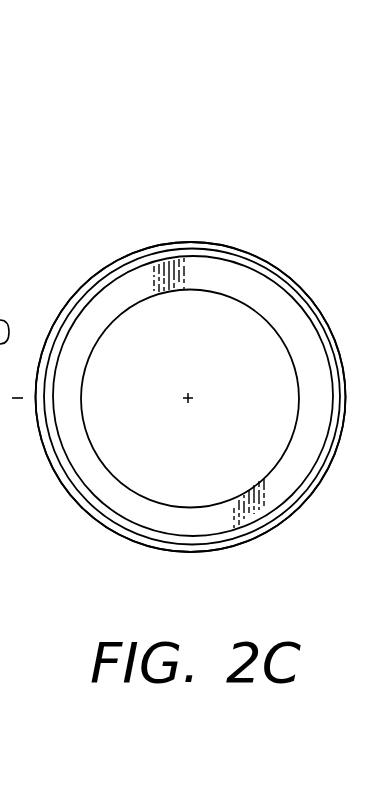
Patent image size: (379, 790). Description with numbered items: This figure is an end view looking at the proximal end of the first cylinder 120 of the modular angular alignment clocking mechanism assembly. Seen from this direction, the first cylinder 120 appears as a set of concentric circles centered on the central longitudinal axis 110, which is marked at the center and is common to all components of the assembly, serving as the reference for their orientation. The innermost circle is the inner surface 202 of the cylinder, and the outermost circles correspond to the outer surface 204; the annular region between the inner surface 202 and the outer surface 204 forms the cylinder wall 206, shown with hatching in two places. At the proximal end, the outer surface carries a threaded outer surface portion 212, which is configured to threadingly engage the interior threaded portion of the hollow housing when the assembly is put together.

The first cylinder 120 is at (262, 218).
The outer surface 204 is at (160, 246).
The threaded outer surface portion 212 is at (295, 498).
The cylinder wall 206 is at (95, 309).
The inner surface 202 is at (254, 314).
The central longitudinal axis 110 is at (193, 393).